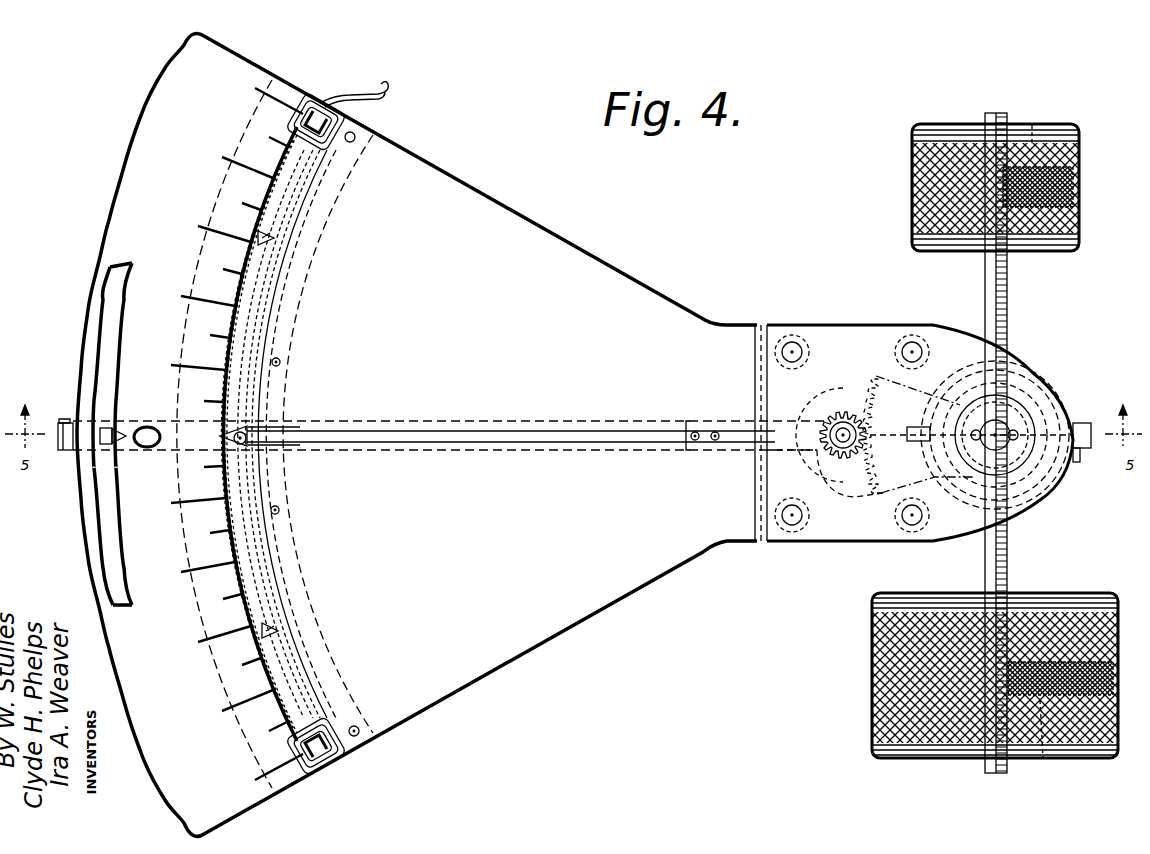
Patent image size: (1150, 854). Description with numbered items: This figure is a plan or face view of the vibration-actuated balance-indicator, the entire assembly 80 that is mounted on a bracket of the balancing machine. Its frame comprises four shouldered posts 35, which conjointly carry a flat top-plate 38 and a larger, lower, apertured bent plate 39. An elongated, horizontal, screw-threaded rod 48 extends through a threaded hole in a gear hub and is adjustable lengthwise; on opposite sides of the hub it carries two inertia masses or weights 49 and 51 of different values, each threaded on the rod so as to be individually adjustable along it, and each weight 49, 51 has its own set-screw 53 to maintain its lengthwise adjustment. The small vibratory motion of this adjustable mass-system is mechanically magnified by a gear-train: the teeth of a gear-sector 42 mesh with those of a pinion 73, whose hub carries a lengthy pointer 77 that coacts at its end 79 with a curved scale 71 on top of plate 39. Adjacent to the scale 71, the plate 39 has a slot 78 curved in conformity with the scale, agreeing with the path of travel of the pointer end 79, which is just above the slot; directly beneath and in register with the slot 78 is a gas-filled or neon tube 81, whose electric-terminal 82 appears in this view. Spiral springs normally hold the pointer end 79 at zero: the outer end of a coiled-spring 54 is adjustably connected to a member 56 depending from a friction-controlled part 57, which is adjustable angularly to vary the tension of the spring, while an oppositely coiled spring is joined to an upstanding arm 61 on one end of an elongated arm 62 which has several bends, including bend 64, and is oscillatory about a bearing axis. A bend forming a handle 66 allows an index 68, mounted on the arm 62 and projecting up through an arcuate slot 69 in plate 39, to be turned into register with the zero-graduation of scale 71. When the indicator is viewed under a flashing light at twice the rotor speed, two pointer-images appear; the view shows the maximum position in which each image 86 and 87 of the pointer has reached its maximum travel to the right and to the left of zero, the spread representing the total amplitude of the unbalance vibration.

The shouldered posts 35 is at (910, 340).
The flat top-plate 38 is at (943, 347).
The apertured bent plate 39 is at (497, 414).
The gear-sector 42 is at (876, 376).
The screw-threaded rod 48 is at (1007, 557).
The inertia mass 49 is at (1078, 148).
The inertia mass 51 is at (1097, 608).
The set-screw 53 is at (1032, 125).
The coiled-spring 54 is at (1018, 387).
The member 56 is at (915, 427).
The friction-controlled part 57 is at (1083, 421).
The upstanding arm 61 is at (1054, 392).
The elongated arm 62 is at (515, 449).
The bend 64 is at (855, 500).
The handle 66 is at (61, 420).
The index 68 is at (108, 447).
The arcuate slot 69 is at (108, 338).
The curved scale 71 is at (240, 310).
The pinion 73 is at (839, 421).
The pointer 77 is at (348, 430).
The slot 78 is at (262, 587).
The pointer end 79 is at (237, 452).
The balance-indicator assembly 80 is at (538, 221).
The neon tube 81 is at (243, 555).
The electric-terminal 82 is at (371, 90).
The pointer image 86 is at (274, 238).
The pointer image 87 is at (278, 631).